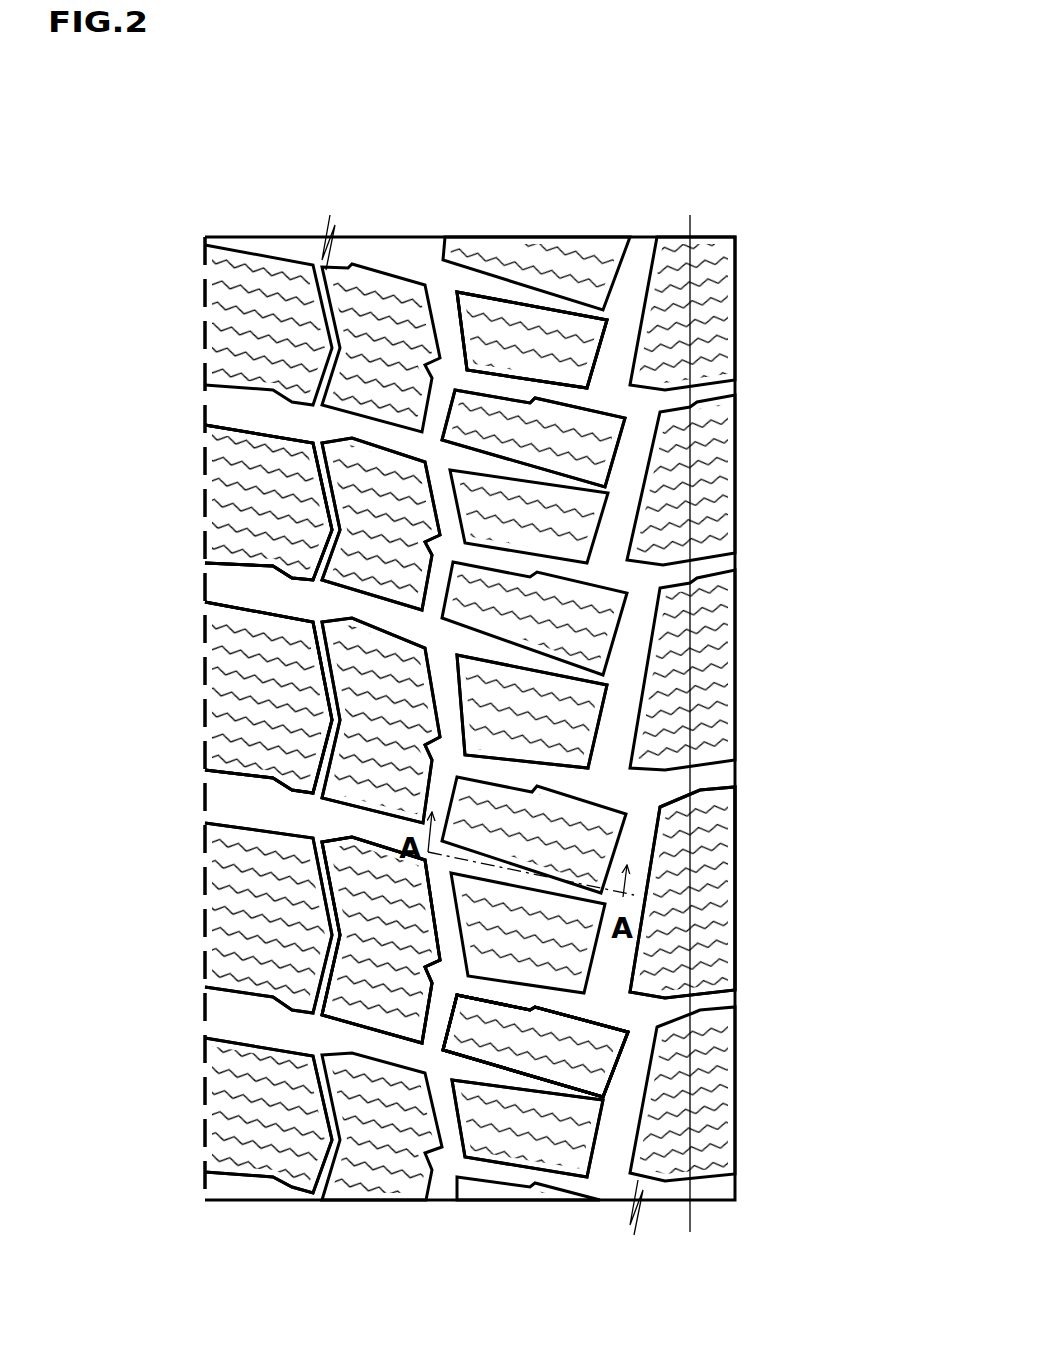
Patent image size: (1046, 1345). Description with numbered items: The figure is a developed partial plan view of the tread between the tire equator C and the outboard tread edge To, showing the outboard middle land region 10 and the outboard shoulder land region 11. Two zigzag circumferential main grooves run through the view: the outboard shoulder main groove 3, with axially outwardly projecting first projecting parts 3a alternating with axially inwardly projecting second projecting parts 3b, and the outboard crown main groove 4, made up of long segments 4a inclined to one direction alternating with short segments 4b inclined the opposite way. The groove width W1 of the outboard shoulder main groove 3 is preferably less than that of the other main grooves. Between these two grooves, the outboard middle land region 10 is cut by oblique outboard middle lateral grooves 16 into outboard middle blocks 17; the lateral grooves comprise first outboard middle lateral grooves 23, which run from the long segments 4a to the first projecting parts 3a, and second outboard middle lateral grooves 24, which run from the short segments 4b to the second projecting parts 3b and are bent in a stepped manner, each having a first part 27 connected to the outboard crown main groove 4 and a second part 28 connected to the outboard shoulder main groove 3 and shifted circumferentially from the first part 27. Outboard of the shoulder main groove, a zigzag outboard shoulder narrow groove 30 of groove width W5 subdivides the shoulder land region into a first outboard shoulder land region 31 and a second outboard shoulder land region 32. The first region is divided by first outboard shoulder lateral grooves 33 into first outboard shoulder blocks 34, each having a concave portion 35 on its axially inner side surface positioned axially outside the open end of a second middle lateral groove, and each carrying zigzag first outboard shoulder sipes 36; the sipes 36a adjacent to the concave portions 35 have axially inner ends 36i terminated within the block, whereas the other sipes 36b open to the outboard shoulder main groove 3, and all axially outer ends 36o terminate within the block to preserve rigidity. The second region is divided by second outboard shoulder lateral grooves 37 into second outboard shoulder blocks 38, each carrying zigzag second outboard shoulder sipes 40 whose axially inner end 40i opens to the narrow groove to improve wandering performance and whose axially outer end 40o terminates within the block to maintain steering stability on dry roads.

The outboard shoulder main groove 3 is at (440, 305).
The outboard crown main groove 4 is at (627, 285).
The outboard middle land region 10 is at (532, 268).
The outboard shoulder land region 11 is at (378, 140).
The outboard middle lateral grooves 16 is at (822, 290).
The outboard middle blocks 17 is at (522, 470).
The first outboard middle lateral grooves 23 is at (510, 465).
The second outboard middle lateral grooves 24 is at (548, 392).
The first part 27 is at (487, 992).
The second part 28 is at (575, 1005).
The outboard shoulder narrow groove 30 is at (332, 1185).
The first outboard shoulder land region 31 is at (385, 330).
The second outboard shoulder land region 32 is at (260, 305).
The first outboard shoulder lateral grooves 33 is at (255, 402).
The first outboard shoulder blocks 34 is at (375, 487).
The concave portion 35 is at (378, 660).
The first outboard shoulder sipes 36 is at (95, 872).
The first outboard shoulder sipes adjacent to the concave portions 36a is at (365, 958).
The other first outboard shoulder sipes 36b is at (365, 875).
The axially inner ends of the first outboard shoulder sipes 36i is at (466, 1038).
The axially outer ends of the first outboard shoulder sipes 36o is at (325, 1020).
The second outboard shoulder lateral grooves 37 is at (375, 437).
The second outboard shoulder blocks 38 is at (285, 488).
The second outboard shoulder sipes 40 is at (330, 745).
The axially inner end of the second outboard shoulder sipe 40i is at (320, 800).
The axially outer end of the second outboard shoulder sipe 40o is at (207, 730).
The first projecting parts 3a is at (532, 520).
The second projecting parts 3b is at (453, 760).
The long segments 4a is at (622, 670).
The short segments 4b is at (637, 795).
The outboard tread edge To is at (205, 275).
The tire equator C is at (690, 705).
The groove width of the outboard shoulder main groove W1 is at (434, 1118).
The groove width of the outboard shoulder narrow groove W5 is at (340, 1092).